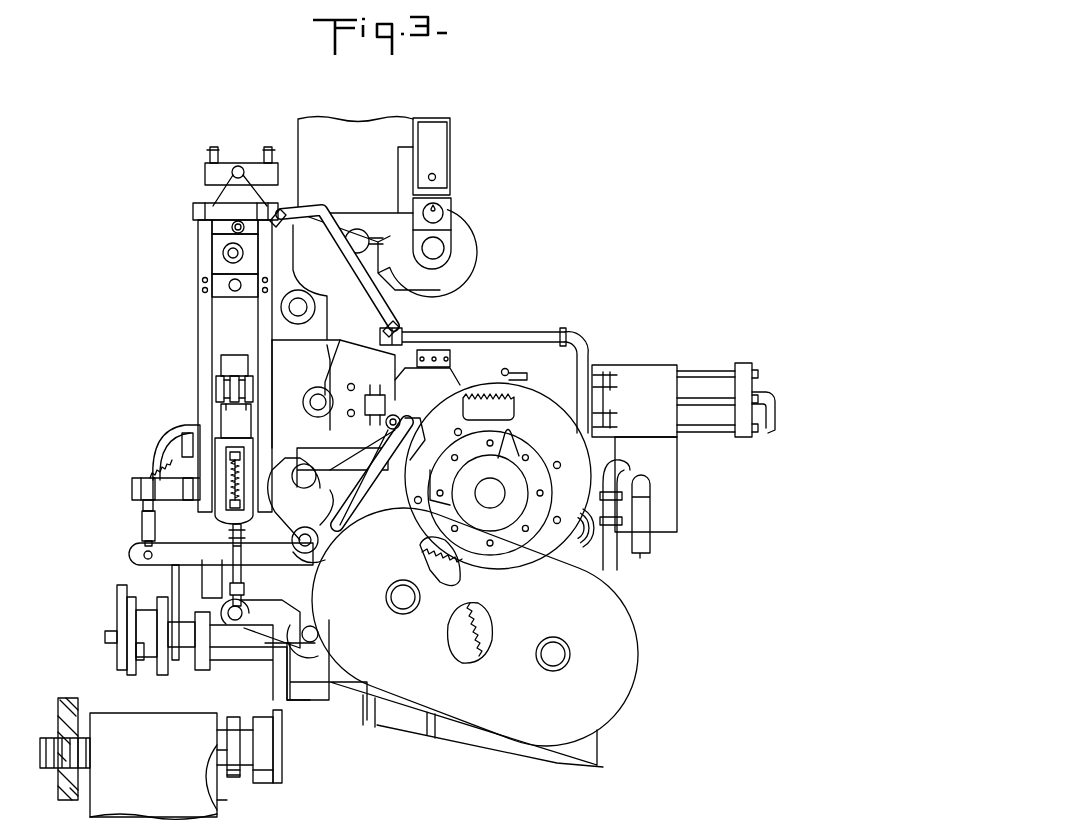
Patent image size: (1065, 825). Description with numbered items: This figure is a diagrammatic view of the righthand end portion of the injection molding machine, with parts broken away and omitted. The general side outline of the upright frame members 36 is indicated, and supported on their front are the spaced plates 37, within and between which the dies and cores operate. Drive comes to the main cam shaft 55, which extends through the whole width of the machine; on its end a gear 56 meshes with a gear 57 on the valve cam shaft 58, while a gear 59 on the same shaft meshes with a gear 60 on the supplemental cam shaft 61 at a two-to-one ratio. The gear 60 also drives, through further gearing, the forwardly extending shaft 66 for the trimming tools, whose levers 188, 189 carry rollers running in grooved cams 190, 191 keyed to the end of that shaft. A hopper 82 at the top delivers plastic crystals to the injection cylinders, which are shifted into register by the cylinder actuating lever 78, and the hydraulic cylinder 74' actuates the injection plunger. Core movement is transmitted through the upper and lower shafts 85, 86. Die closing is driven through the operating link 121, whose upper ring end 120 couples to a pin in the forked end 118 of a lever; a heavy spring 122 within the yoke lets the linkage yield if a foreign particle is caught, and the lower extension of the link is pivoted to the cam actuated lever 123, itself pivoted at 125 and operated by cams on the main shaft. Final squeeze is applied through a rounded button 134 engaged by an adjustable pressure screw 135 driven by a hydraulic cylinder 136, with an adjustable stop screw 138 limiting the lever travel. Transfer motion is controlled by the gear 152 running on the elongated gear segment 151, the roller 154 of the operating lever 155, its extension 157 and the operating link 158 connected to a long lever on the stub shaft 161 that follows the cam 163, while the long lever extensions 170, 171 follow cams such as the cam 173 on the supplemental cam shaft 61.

The upright spaced frame members 36 is at (323, 208).
The spaced plates 37 is at (267, 322).
The main cam shaft 55 is at (405, 603).
The gear 56 is at (470, 612).
The gear 57 is at (488, 637).
The valve cam shaft 58 is at (560, 670).
The gear 59 is at (415, 565).
The gear 60 is at (477, 403).
The supplemental cam shaft 61 is at (494, 490).
The forwardly extending shaft 66 is at (235, 640).
The hydraulic cylinder 74' is at (726, 384).
The cylinder actuating lever 78 is at (437, 380).
The hopper 82 is at (400, 118).
The upper shaft 85 is at (298, 307).
The lower shaft 86 is at (300, 455).
The forked end 118 is at (218, 386).
The upper ring end 120 is at (232, 372).
The operating link 121 is at (222, 447).
The heavy spring 122 is at (228, 481).
The cam actuated lever 123 is at (262, 618).
The pivot 125 is at (312, 643).
The rounded button 134 is at (215, 795).
The adjustable pressure screw 135 is at (245, 770).
The hydraulic cylinder 136 is at (270, 706).
The adjustable backup or stop screw 138 is at (50, 762).
The elongated gear segment 151 is at (163, 467).
The gear 152 is at (185, 440).
The roller 154 is at (165, 435).
The operating lever 155 is at (148, 503).
The extension 157 is at (137, 490).
The operating link 158 is at (143, 527).
The stub shaft 161 is at (322, 548).
The cam 163 is at (510, 433).
The lever extension 170 is at (383, 463).
The lever extension 171 is at (378, 437).
The cam 173 is at (530, 392).
The lever 188 is at (172, 578).
The lever 189 is at (113, 657).
The cam 190 is at (153, 612).
The cam 191 is at (130, 625).